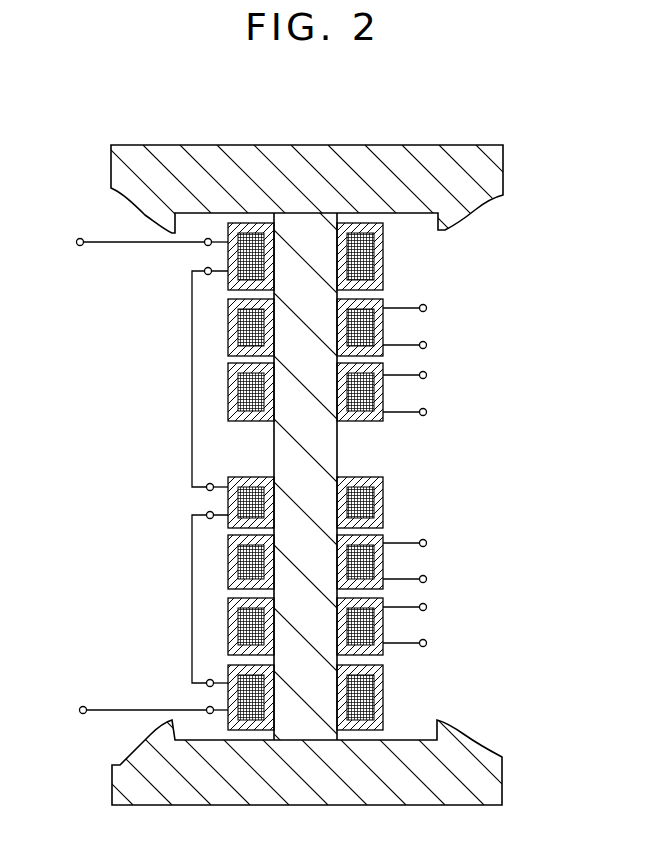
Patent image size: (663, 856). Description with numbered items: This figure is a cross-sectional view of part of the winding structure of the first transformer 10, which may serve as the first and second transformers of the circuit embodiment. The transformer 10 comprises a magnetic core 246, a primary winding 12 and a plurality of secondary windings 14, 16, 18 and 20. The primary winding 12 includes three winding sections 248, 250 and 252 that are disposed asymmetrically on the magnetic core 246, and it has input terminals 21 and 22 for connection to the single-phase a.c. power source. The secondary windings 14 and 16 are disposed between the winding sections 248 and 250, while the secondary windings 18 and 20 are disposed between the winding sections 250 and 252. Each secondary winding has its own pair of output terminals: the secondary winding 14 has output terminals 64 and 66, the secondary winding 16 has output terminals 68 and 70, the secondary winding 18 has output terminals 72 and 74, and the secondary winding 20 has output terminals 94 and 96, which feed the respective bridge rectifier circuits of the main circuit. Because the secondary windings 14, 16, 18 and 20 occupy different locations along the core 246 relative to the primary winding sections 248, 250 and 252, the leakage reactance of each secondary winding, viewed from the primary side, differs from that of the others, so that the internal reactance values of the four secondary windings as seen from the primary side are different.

The first transformer 10 is at (316, 130).
The primary winding 12 is at (194, 476).
The secondary winding 14 is at (383, 295).
The secondary winding 16 is at (385, 372).
The secondary winding 18 is at (384, 536).
The secondary winding 20 is at (384, 607).
The input terminal 21 is at (76, 242).
The input terminal 22 is at (82, 706).
The output terminal 64 is at (427, 308).
The output terminal 66 is at (427, 345).
The output terminal 68 is at (427, 375).
The output terminal 70 is at (427, 412).
The output terminal 72 is at (427, 543).
The output terminal 74 is at (427, 579).
The output terminal 94 is at (427, 607).
The output terminal 96 is at (427, 643).
The magnetic core 246 is at (338, 452).
The winding section 248 is at (227, 259).
The winding section 250 is at (260, 477).
The winding section 252 is at (227, 676).